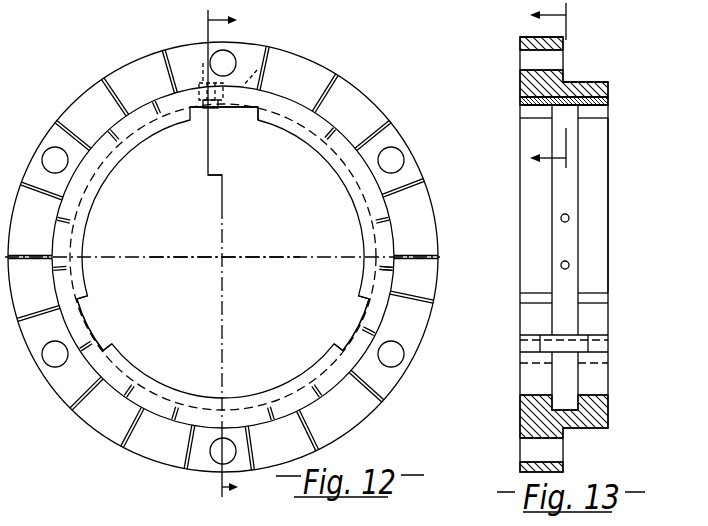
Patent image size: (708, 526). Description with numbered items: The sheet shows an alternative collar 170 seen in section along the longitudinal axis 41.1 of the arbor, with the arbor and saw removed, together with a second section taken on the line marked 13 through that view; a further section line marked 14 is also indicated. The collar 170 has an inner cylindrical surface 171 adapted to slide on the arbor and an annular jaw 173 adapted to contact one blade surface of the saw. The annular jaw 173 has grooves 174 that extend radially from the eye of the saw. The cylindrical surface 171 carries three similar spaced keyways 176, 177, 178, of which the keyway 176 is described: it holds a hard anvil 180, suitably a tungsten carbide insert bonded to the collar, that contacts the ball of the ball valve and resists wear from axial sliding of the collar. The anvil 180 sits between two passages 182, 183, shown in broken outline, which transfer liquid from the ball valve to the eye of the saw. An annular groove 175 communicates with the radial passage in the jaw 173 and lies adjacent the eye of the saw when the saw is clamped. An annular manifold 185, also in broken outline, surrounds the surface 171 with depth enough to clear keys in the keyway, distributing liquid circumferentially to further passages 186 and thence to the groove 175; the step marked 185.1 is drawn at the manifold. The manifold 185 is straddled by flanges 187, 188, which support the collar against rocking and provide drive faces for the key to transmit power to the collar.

In FIG. 12, the collar 170 is at (238, 256).
In FIG. 13, the collar 170 is at (558, 237).
In FIG. 12, the inner cylindrical surface 171 is at (102, 192).
In FIG. 12, the annular jaw 173 is at (339, 97).
In FIG. 13, the annular jaw 173 is at (567, 71).
In FIG. 12, the grooves 174 is at (272, 52).
In FIG. 12, the annular groove 175 is at (286, 86).
In FIG. 13, the annular groove 175 is at (562, 83).
In FIG. 12, the keyway 176 is at (226, 110).
In FIG. 13, the keyway 176 is at (513, 110).
In FIG. 12, the keyway 177 is at (334, 344).
In FIG. 12, the keyway 178 is at (93, 321).
In FIG. 12, the hard anvil 180 is at (199, 110).
In FIG. 13, the hard anvil 180 is at (609, 104).
In FIG. 12, the passage 182 is at (203, 68).
In FIG. 12, the passage 183 is at (256, 72).
In FIG. 12, the annular manifold 185 is at (322, 162).
In FIG. 13, the annular manifold 185 is at (552, 247).
In FIG. 12, the slot bottom 185.1 is at (346, 175).
In FIG. 12, the further passages 186 is at (374, 253).
In FIG. 13, the further passages 186 is at (569, 218).
In FIG. 13, the flange 187 is at (598, 196).
In FIG. 13, the flange 188 is at (532, 180).
In FIG. 12, the axis 41.1 is at (207, 256).
In FIG. 12, the section line 13- 13 is at (203, 256).
In FIG. 13, the section line 14- 14 is at (567, 88).